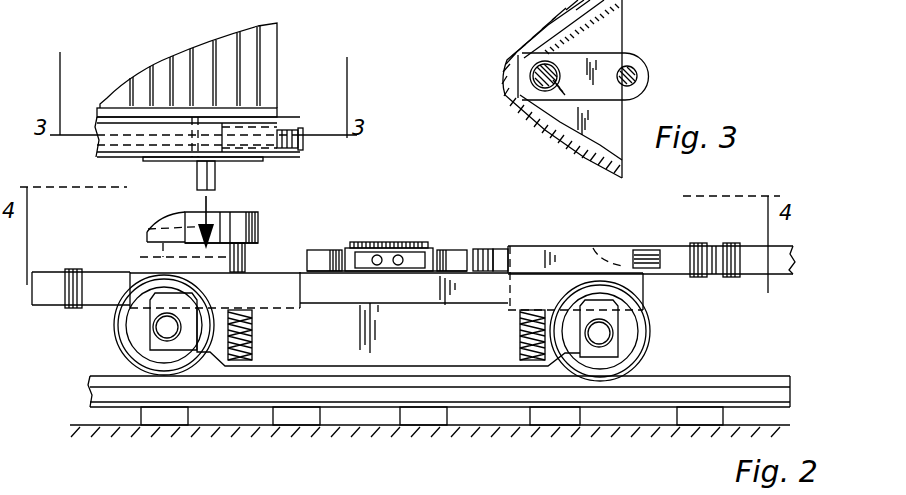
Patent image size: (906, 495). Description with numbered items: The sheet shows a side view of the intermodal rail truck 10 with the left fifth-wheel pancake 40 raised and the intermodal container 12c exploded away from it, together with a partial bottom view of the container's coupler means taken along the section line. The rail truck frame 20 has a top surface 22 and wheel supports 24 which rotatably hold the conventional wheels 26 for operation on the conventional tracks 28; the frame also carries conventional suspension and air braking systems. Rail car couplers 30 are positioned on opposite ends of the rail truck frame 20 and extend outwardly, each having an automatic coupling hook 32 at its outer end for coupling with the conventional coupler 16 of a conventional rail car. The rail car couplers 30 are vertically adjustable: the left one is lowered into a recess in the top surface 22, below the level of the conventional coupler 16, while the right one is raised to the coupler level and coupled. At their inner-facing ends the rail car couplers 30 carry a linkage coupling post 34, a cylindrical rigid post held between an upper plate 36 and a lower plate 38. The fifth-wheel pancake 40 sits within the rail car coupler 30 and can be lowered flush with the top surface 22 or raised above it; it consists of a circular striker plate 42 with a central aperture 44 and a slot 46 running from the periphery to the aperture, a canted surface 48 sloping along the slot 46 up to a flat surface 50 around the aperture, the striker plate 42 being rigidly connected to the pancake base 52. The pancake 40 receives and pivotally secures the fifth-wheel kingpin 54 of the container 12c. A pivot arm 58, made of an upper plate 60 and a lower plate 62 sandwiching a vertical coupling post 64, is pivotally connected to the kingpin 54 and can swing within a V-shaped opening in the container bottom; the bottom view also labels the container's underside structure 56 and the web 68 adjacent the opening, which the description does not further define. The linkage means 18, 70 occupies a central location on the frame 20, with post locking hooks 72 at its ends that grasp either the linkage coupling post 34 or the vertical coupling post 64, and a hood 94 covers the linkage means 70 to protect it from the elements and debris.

In FIG. 2, the intermodal rail truck 10 is at (626, 198).
In FIG. 2, the intermodal container 12c is at (198, 36).
In FIG. 3, the intermodal container 12c is at (518, 24).
In FIG. 2, the conventional coupler 16 is at (782, 254).
In FIG. 2, the linkage means 18 is at (424, 194).
In FIG. 2, the rail truck frame 20 is at (312, 372).
In FIG. 2, the top surface 22 is at (297, 294).
In FIG. 2, the wheel supports 24 is at (497, 364).
In FIG. 2, the conventional wheels 26 is at (123, 358).
In FIG. 2, the conventional tracks 28 is at (660, 398).
In FIG. 2, the rail car coupler 30 is at (93, 307).
In FIG. 2, the automatic coupling hook 32 is at (52, 308).
In FIG. 2, the linkage coupling post 34 is at (478, 249).
In FIG. 2, the upper plate 36 is at (504, 262).
In FIG. 2, the lower plate 38 is at (508, 278).
In FIG. 2, the fifth-wheel pancake 40 is at (266, 219).
In FIG. 2, the circular striker plate 42 is at (255, 198).
In FIG. 2, the central aperture 44 is at (140, 258).
In FIG. 2, the slot 46 is at (147, 235).
In FIG. 2, the canted surface 48 is at (178, 214).
In FIG. 2, the flat surface 50 is at (222, 200).
In FIG. 2, the pancake base 52 is at (232, 276).
In FIG. 2, the fifth-wheel kingpin 54 is at (197, 176).
In FIG. 3, the fifth-wheel kingpin 54 is at (528, 58).
In FIG. 2, the base plate 56 is at (279, 98).
In FIG. 3, the base plate 56 is at (615, 42).
In FIG. 2, the pivot arm 58 is at (283, 166).
In FIG. 3, the pivot arm 58 is at (628, 40).
In FIG. 2, the upper plate 60 is at (290, 121).
In FIG. 2, the lower plate 62 is at (300, 150).
In FIG. 3, the lower plate 62 is at (641, 88).
In FIG. 2, the vertical coupling post 64 is at (303, 131).
In FIG. 3, the vertical coupling post 64 is at (637, 74).
In FIG. 3, the web 68 is at (607, 124).
In FIG. 2, the linkage means 70 is at (343, 224).
In FIG. 2, the post locking hooks 72 is at (300, 262).
In FIG. 2, the hood 94 is at (378, 241).